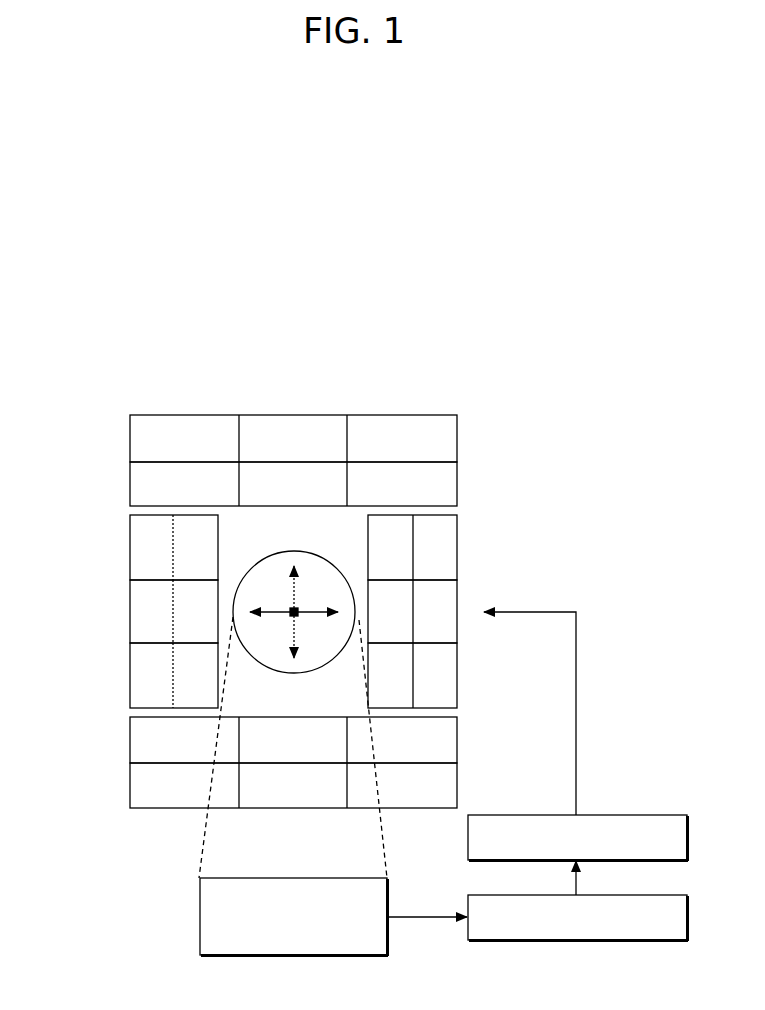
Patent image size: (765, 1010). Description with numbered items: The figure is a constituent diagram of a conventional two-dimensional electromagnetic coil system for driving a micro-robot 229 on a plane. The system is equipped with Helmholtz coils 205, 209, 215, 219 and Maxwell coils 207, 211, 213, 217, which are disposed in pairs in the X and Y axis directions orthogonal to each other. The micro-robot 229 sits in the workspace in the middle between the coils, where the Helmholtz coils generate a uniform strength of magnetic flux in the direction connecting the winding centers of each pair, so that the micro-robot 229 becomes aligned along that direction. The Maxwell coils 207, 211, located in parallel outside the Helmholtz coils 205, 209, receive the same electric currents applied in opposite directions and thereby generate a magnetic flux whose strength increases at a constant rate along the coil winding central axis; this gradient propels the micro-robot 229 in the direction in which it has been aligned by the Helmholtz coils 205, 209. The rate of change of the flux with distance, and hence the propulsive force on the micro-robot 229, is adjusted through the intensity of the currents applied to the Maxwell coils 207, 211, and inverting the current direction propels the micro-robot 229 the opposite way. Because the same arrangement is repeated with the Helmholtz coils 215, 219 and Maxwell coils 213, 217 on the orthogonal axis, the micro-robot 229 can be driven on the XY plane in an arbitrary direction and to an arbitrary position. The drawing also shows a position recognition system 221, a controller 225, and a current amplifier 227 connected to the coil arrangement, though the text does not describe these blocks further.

The Helmholtz coil 205 is at (183, 572).
The Maxwell coil 207 is at (136, 657).
The Helmholtz coil 209 is at (403, 560).
The Maxwell coil 211 is at (457, 676).
The Maxwell coil 213 is at (130, 793).
The Helmholtz coil 215 is at (130, 740).
The Maxwell coil 217 is at (130, 437).
The Helmholtz coil 219 is at (130, 483).
The position recognition system 221 is at (294, 956).
The controller 225 is at (578, 941).
The current amplifier 227 is at (645, 815).
The micro-robot 229 is at (294, 610).